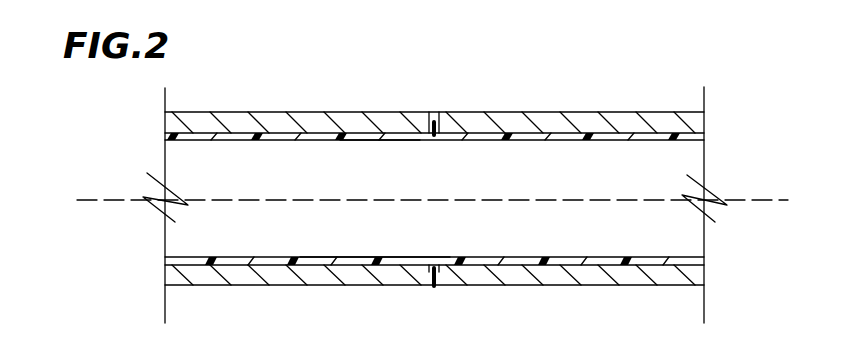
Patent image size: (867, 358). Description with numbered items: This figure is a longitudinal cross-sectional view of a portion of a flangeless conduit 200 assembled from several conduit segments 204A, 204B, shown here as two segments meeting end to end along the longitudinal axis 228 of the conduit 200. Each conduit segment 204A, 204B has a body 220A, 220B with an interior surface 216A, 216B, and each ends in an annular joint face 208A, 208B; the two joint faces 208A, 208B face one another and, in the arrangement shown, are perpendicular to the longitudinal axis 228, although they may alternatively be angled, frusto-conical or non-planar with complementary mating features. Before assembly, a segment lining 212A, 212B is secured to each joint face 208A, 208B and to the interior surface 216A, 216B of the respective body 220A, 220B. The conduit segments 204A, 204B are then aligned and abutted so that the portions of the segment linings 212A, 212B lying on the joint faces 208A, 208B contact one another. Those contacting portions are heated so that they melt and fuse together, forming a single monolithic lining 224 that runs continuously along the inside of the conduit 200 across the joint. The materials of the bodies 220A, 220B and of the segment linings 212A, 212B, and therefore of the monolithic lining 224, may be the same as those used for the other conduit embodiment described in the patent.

The flangeless conduit 200 is at (672, 57).
The conduit segment 204A is at (250, 108).
The conduit segment 204B is at (619, 100).
The annular joint face 208A is at (435, 130).
The annular joint face 208B is at (424, 136).
The segment lining 212A is at (326, 137).
The segment lining 212B is at (576, 137).
The interior surface 216A is at (350, 141).
The interior surface 216B is at (570, 258).
The body 220A is at (195, 276).
The body 220B is at (470, 276).
The monolithic lining 224 is at (375, 257).
The longitudinal axis 228 is at (426, 213).